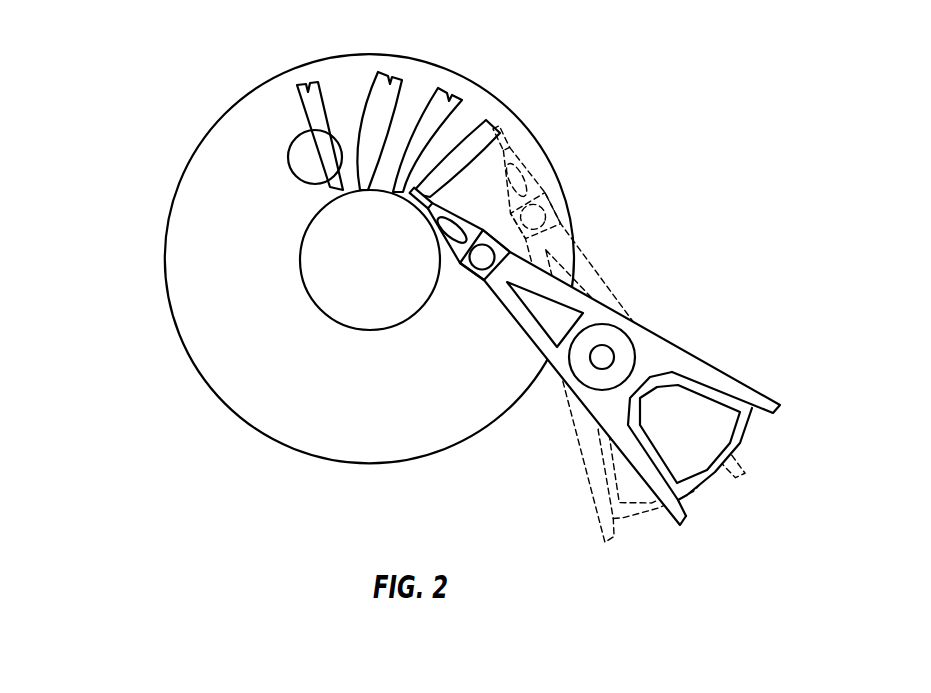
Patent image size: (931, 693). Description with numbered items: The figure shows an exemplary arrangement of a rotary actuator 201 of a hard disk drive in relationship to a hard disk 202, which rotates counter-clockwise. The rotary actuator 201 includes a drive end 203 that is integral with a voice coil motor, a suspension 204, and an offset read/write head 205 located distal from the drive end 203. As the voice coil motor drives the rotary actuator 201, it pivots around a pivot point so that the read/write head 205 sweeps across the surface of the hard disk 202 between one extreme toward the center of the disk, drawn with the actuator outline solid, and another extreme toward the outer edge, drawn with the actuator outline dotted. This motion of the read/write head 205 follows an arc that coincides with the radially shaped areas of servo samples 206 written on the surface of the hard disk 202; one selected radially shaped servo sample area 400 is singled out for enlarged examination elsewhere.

The rotary actuator 201 is at (593, 353).
The hard disk 202 is at (188, 280).
The drive end 203 is at (749, 369).
The suspension 204 is at (532, 332).
The read/write head 205 is at (412, 203).
The servo samples 206 is at (535, 91).
The servo sample area 400 is at (289, 167).